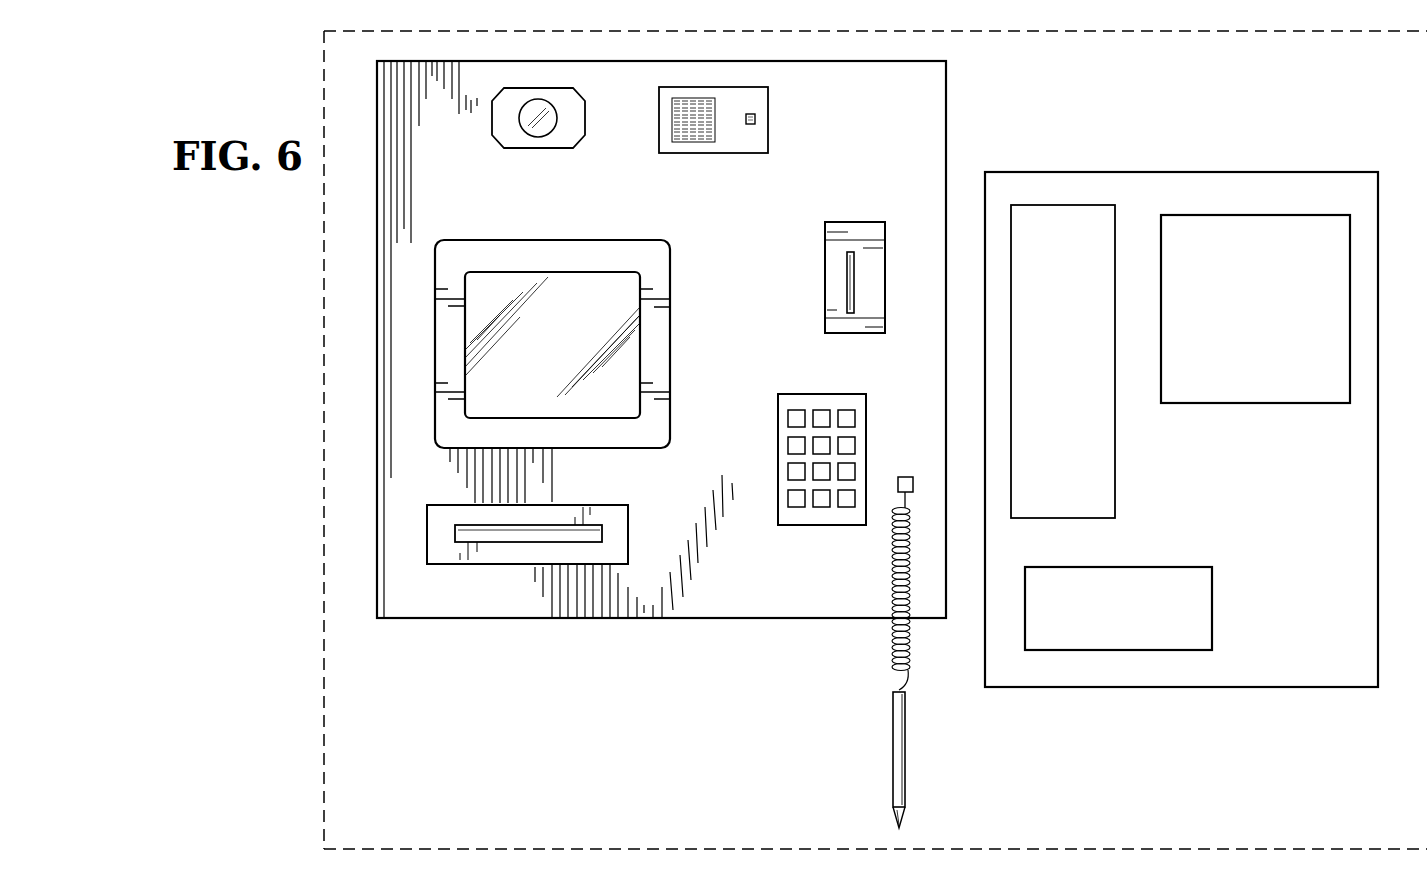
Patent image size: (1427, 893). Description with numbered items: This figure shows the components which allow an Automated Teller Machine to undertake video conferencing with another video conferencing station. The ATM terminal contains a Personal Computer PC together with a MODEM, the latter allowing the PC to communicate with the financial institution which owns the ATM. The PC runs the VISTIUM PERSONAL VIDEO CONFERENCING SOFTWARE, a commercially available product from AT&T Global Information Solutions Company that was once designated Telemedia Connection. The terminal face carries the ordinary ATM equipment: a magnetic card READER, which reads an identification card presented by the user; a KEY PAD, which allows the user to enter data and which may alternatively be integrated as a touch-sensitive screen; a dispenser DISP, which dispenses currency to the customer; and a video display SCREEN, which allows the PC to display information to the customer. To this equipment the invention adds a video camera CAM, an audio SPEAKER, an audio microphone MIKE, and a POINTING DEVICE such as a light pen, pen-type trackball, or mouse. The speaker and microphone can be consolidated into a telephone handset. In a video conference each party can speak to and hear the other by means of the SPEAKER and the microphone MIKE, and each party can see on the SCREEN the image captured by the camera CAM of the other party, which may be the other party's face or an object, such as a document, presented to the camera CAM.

The video camera CAM is at (502, 135).
The audio speaker SPEAKER is at (680, 138).
The audio microphone MIKE is at (755, 119).
The video display SCREEN is at (557, 280).
The magnetic card reader READER is at (835, 260).
The dispenser DISP is at (503, 553).
The keypad KEY PAD is at (830, 515).
The pointing device POINTING DEVICE is at (898, 733).
The personal computer PC is at (1063, 361).
The Vistium personal video conferencing software SOFTWARE is at (1255, 309).
The modem MODEM is at (1118, 608).